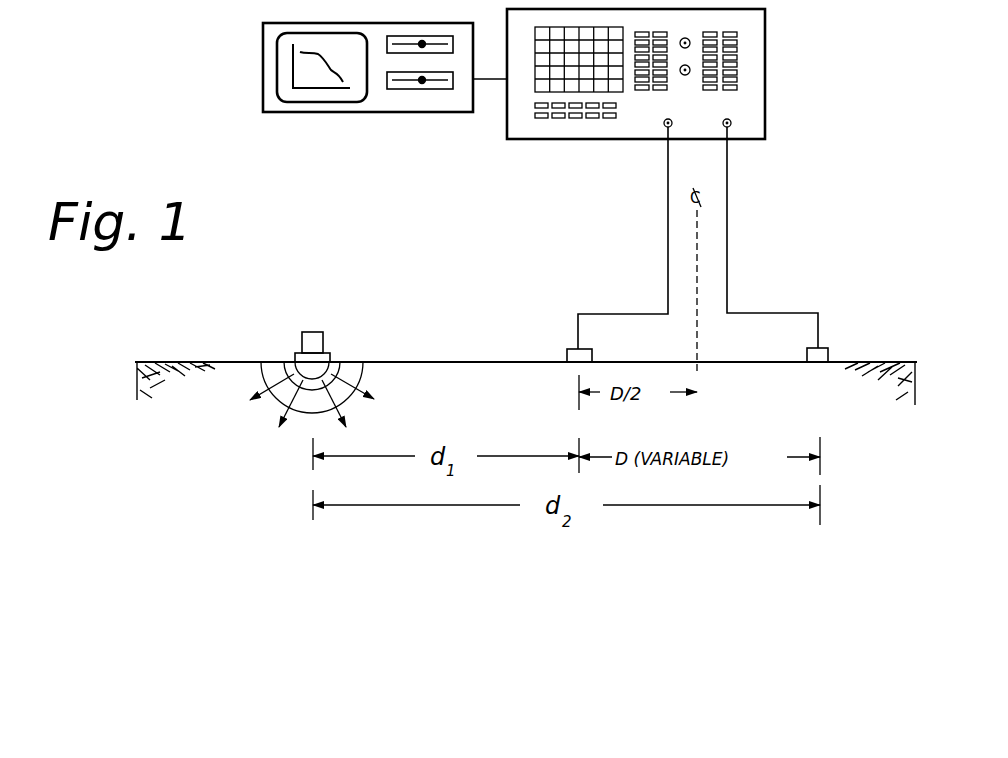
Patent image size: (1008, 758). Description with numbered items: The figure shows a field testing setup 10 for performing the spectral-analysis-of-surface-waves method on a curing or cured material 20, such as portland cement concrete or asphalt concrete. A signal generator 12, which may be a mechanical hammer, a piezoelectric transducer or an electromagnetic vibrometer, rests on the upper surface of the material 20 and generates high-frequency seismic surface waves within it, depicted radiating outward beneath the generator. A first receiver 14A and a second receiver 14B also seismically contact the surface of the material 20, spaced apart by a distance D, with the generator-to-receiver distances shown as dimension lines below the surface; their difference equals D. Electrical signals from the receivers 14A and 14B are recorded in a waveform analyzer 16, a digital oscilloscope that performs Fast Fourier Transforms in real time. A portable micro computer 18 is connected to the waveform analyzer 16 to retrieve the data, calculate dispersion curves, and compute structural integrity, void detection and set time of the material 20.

The field testing setup 10 is at (772, 47).
The signal generator 12 is at (325, 342).
The first receiver 14A is at (567, 351).
The second receiver 14B is at (830, 350).
The waveform analyzer 16 is at (765, 103).
The micro computer 18 is at (263, 58).
The curing or cured material 20 is at (214, 474).